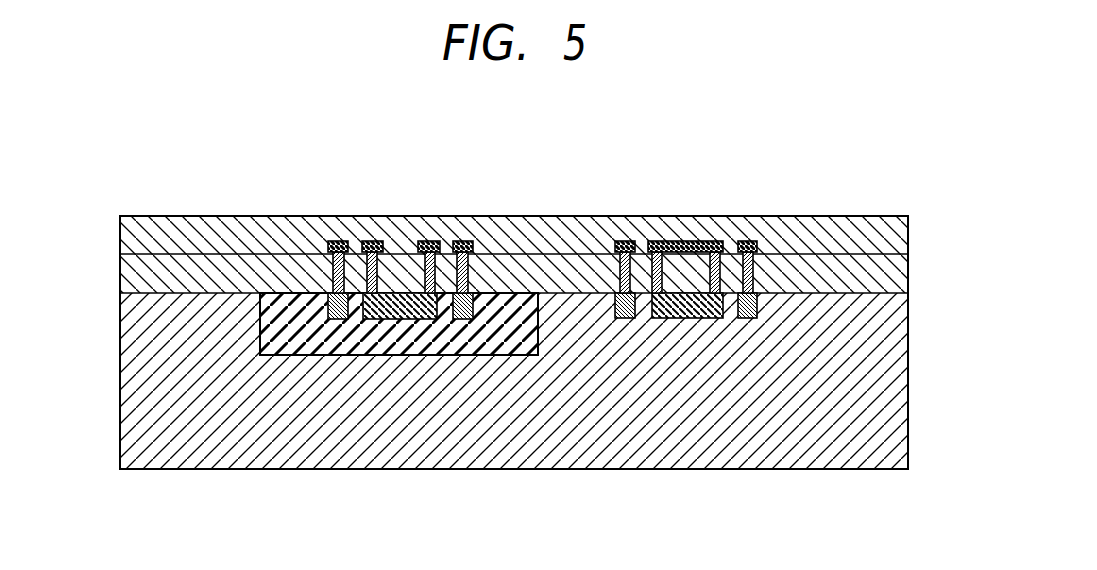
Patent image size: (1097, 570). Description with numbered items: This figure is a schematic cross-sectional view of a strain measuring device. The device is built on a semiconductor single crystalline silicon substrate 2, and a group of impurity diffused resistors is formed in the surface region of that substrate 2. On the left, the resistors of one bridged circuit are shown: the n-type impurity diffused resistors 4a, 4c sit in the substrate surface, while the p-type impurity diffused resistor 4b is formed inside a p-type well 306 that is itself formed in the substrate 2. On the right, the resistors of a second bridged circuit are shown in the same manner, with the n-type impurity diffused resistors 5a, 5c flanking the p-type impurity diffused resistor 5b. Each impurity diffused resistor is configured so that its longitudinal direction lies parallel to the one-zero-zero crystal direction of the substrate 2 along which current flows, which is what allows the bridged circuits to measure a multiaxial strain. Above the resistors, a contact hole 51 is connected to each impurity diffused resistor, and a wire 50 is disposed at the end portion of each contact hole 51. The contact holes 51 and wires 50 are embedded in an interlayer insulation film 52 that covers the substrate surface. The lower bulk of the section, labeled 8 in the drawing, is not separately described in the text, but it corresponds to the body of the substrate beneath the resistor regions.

The semiconductor single crystalline substrate 2 is at (888, 332).
The semiconductor substrate 8 is at (153, 450).
The interlayer insulation film 52 is at (135, 245).
The p-type well 306 is at (270, 328).
The n-type impurity diffused resistor 4a is at (333, 320).
The p-type impurity diffused resistor 4b is at (398, 320).
The n-type impurity diffused resistor 4c is at (455, 320).
The n-type impurity diffused resistor 5a is at (620, 320).
The p-type impurity diffused resistor 5b is at (690, 320).
The n-type impurity diffused resistor 5c is at (747, 320).
The wire 50 is at (369, 250).
The contact hole 51 is at (310, 246).